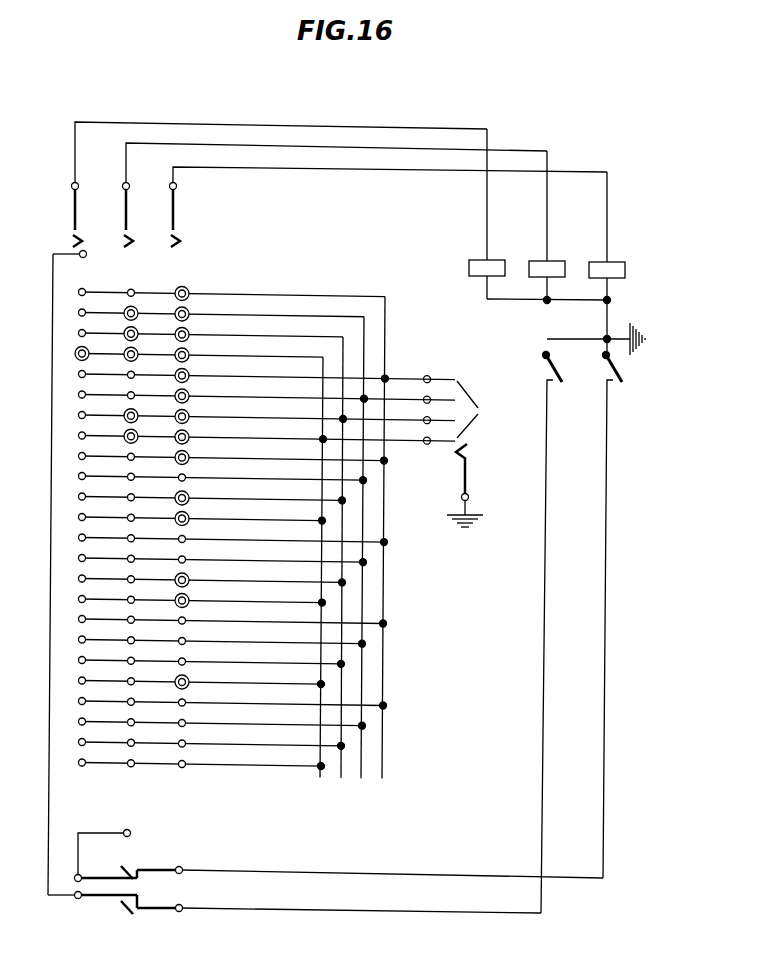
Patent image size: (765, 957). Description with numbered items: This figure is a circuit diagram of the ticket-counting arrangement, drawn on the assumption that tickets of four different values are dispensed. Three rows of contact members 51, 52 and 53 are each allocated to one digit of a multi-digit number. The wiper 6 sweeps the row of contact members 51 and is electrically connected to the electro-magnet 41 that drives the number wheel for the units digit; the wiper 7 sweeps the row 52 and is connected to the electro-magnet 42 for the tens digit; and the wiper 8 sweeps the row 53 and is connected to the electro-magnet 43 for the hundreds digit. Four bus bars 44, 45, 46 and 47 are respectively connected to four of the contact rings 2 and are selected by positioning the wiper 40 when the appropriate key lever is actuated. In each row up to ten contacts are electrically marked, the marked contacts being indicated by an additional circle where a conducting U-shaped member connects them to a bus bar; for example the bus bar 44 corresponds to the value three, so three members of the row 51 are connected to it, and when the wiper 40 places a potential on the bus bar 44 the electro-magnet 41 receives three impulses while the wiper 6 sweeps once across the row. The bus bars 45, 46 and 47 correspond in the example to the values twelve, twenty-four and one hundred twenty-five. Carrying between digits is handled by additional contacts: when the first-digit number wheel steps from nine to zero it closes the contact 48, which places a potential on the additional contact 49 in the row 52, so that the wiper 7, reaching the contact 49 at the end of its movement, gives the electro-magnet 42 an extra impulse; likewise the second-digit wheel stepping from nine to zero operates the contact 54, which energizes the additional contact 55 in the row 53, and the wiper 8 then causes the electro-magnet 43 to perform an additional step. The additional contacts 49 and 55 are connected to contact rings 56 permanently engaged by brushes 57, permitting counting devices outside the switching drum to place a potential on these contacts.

The contact rings 2 is at (460, 410).
The wiper 6 is at (175, 218).
The wiper 7 is at (128, 218).
The wiper 8 is at (77, 218).
The wiper 40 is at (477, 485).
The electro-magnet 41 is at (594, 262).
The electro-magnet 42 is at (532, 262).
The electro-magnet 43 is at (470, 262).
The bus bar 44 is at (388, 373).
The bus bar 45 is at (367, 365).
The bus bar 46 is at (347, 362).
The bus bar 47 is at (326, 357).
The contact 48 is at (604, 372).
The additional contact 49 is at (130, 833).
The row of contact members 51 is at (190, 280).
The row of contact members 52 is at (137, 280).
The row of contact members 53 is at (88, 280).
The contact 54 is at (544, 372).
The additional contact 55 is at (86, 251).
The contact rings 56 is at (105, 882).
The brushes 57 is at (167, 869).